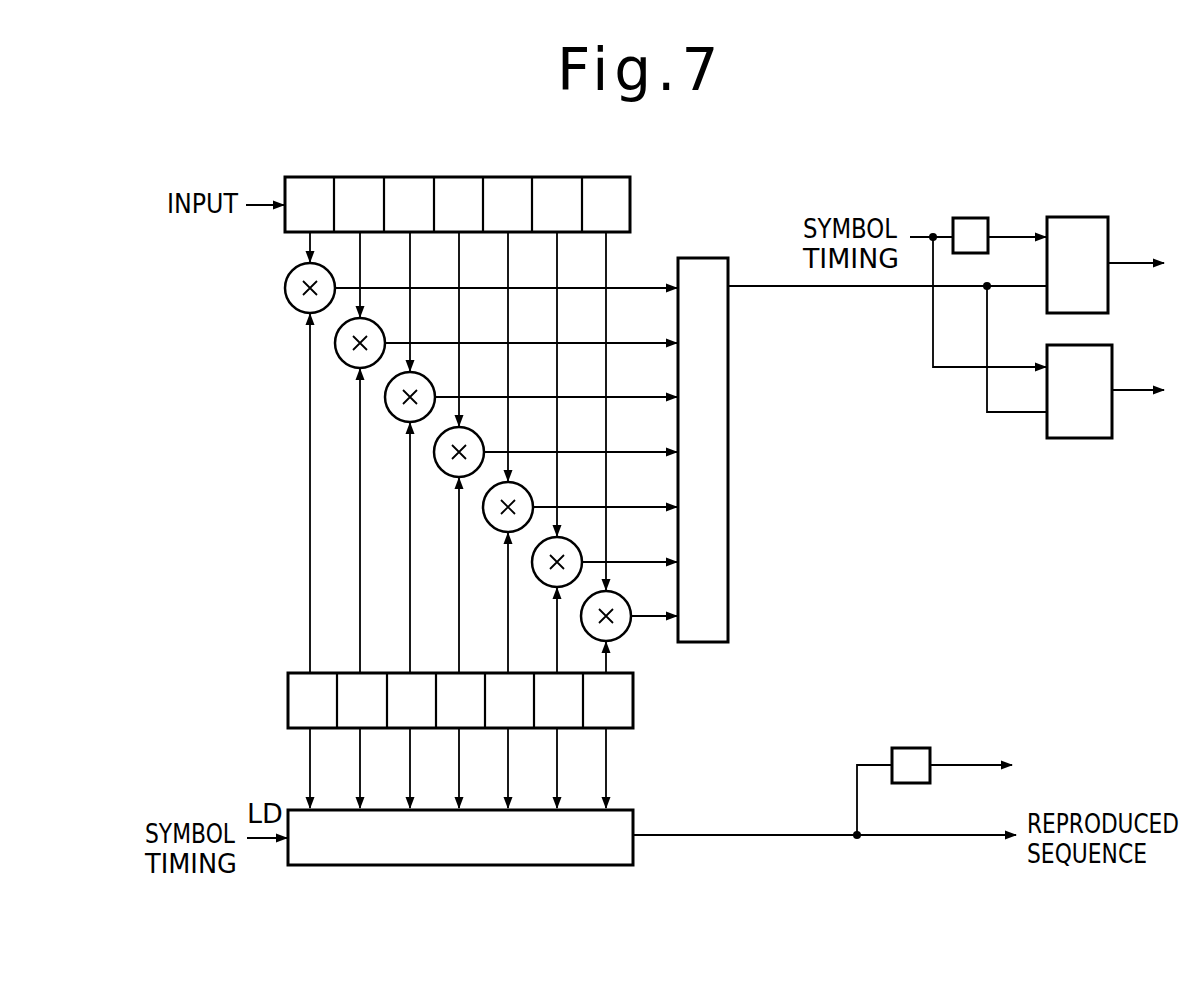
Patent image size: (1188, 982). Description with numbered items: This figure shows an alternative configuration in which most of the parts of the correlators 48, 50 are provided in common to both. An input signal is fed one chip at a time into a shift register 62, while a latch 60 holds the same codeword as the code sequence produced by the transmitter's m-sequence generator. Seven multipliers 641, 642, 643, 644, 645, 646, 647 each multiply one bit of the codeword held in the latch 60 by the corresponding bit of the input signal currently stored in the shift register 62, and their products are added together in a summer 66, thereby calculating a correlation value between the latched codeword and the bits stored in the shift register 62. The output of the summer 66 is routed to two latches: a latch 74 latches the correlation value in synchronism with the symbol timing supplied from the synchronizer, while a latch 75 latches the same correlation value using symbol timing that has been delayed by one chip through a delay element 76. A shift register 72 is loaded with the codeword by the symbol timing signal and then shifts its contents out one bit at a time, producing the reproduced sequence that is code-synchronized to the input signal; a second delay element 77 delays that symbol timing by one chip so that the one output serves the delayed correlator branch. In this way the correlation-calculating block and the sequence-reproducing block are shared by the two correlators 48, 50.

The shift register 62 is at (630, 200).
The latch 60 is at (633, 715).
The multiplier 641 is at (286, 293).
The multiplier 642 is at (344, 364).
The multiplier 643 is at (393, 418).
The multiplier 644 is at (442, 473).
The multiplier 645 is at (491, 528).
The multiplier 646 is at (540, 583).
The multiplier 647 is at (624, 633).
The summer 66 is at (690, 258).
The shift register 72 is at (633, 815).
The correlator 48 is at (782, 878).
The correlator 50 is at (838, 878).
The latch 74 is at (1094, 438).
The latch 75 is at (1086, 217).
The delay element 76 is at (969, 218).
The delay element 77 is at (910, 748).